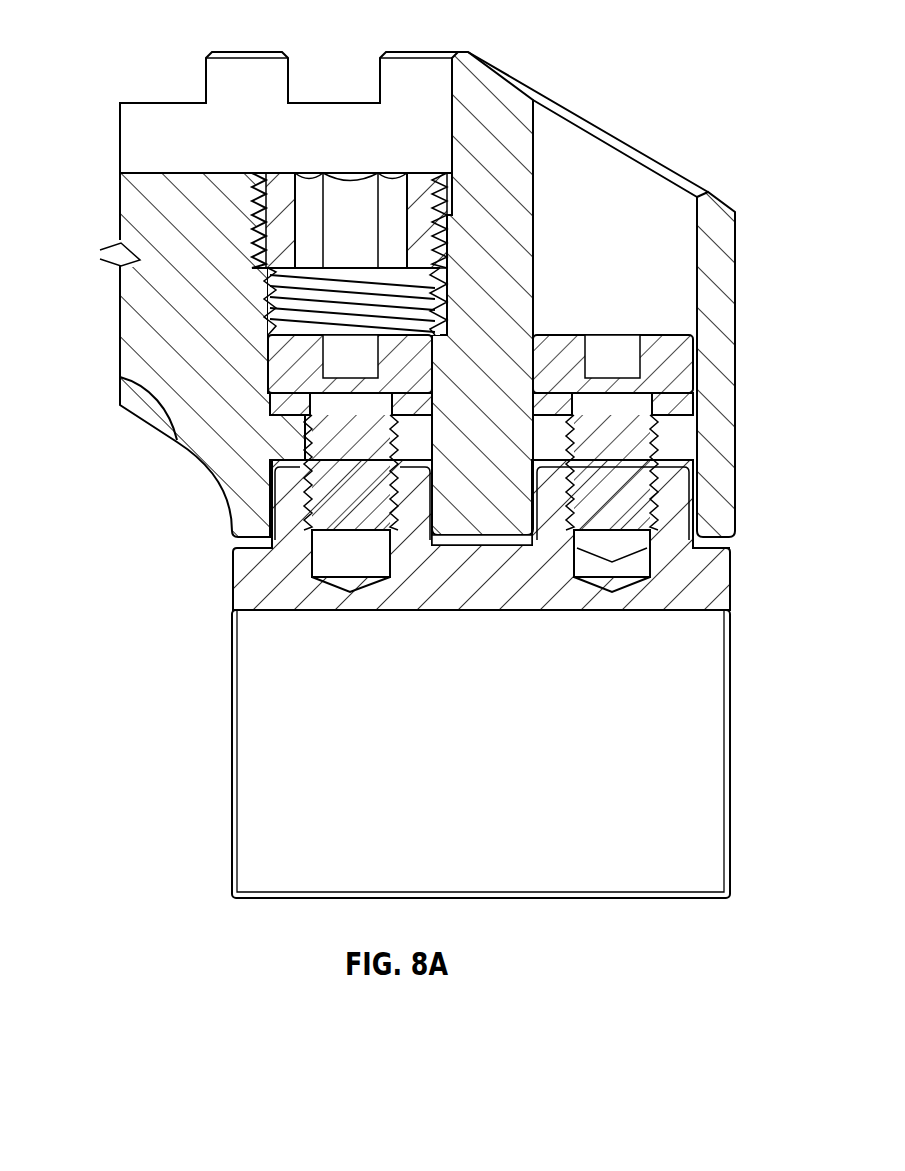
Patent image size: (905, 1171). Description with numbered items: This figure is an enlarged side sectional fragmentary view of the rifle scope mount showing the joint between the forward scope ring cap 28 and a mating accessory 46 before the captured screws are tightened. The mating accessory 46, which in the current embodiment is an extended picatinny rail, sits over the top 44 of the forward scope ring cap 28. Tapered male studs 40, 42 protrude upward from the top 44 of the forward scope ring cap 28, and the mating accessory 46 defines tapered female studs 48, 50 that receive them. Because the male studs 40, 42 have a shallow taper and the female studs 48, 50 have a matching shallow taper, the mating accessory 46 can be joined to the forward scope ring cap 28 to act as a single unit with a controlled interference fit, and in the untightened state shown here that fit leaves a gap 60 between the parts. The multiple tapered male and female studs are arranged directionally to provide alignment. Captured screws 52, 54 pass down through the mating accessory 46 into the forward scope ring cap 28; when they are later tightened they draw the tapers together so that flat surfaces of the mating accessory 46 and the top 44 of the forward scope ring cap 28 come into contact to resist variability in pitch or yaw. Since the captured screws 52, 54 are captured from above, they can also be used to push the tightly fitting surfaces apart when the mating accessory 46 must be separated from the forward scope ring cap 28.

The mating accessory 46 is at (150, 101).
The tapered male stud 42 is at (699, 487).
The forward scope ring cap 28 is at (232, 580).
The top 44 is at (459, 546).
The tapered male stud 40 is at (272, 463).
The tapered female stud 48 is at (272, 497).
The tapered female stud 50 is at (690, 507).
The gap 60 is at (728, 540).
The captured screw 52 is at (290, 372).
The captured screw 54 is at (670, 358).